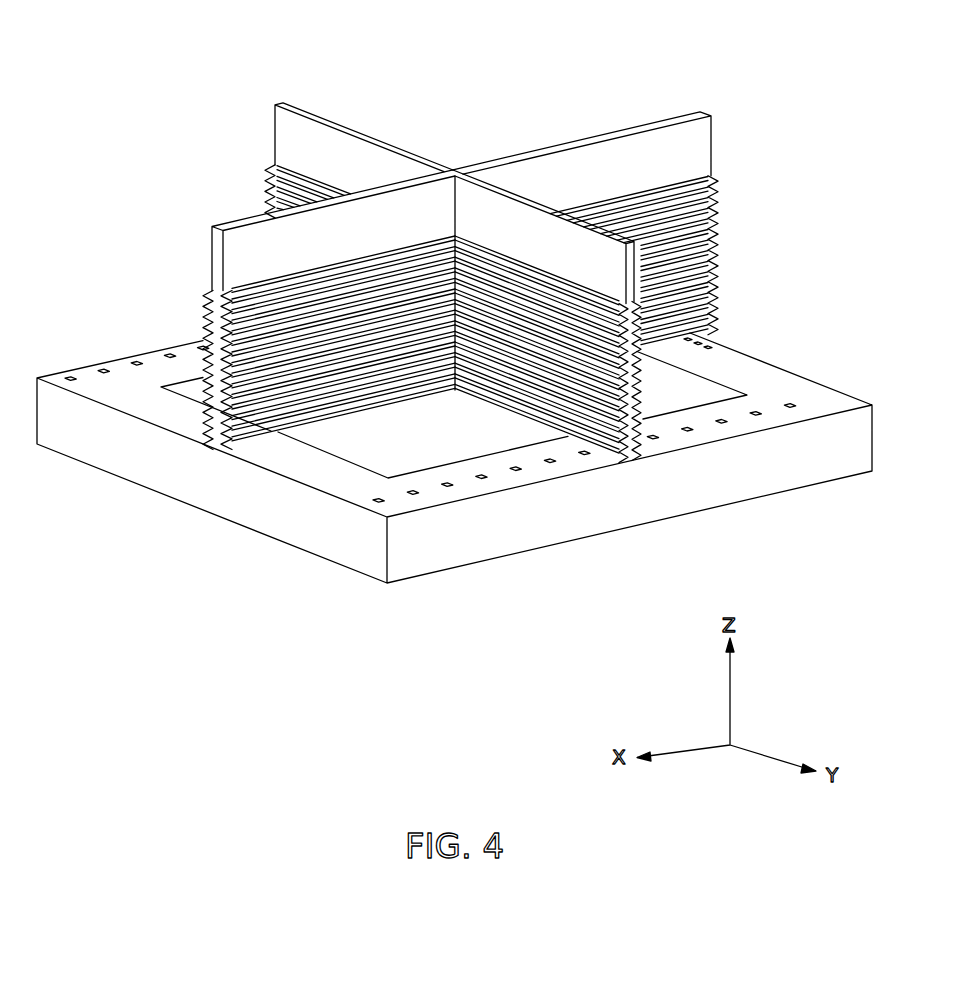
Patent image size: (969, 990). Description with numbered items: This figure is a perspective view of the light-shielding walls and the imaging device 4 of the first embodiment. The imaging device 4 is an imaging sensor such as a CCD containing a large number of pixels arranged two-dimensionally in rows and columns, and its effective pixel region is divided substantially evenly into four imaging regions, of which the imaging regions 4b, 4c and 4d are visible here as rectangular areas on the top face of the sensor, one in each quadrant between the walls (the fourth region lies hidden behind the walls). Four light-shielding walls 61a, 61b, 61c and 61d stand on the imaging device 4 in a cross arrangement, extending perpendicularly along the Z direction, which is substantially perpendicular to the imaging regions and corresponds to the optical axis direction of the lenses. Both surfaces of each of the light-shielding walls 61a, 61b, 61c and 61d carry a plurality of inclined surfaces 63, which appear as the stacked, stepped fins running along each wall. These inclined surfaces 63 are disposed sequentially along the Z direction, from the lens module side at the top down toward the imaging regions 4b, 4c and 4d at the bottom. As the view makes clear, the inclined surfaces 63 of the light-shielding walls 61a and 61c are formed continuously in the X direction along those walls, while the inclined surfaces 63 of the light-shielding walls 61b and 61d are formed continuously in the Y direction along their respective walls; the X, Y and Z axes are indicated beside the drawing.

The imaging device 4 is at (757, 482).
The imaging region 4b is at (680, 385).
The imaging region 4c is at (190, 389).
The imaging region 4d is at (363, 443).
The light-shielding wall 61a is at (665, 222).
The light-shielding wall 61b is at (285, 200).
The light-shielding wall 61c is at (283, 322).
The light-shielding wall 61d is at (530, 313).
The inclined surfaces 63 is at (268, 165).